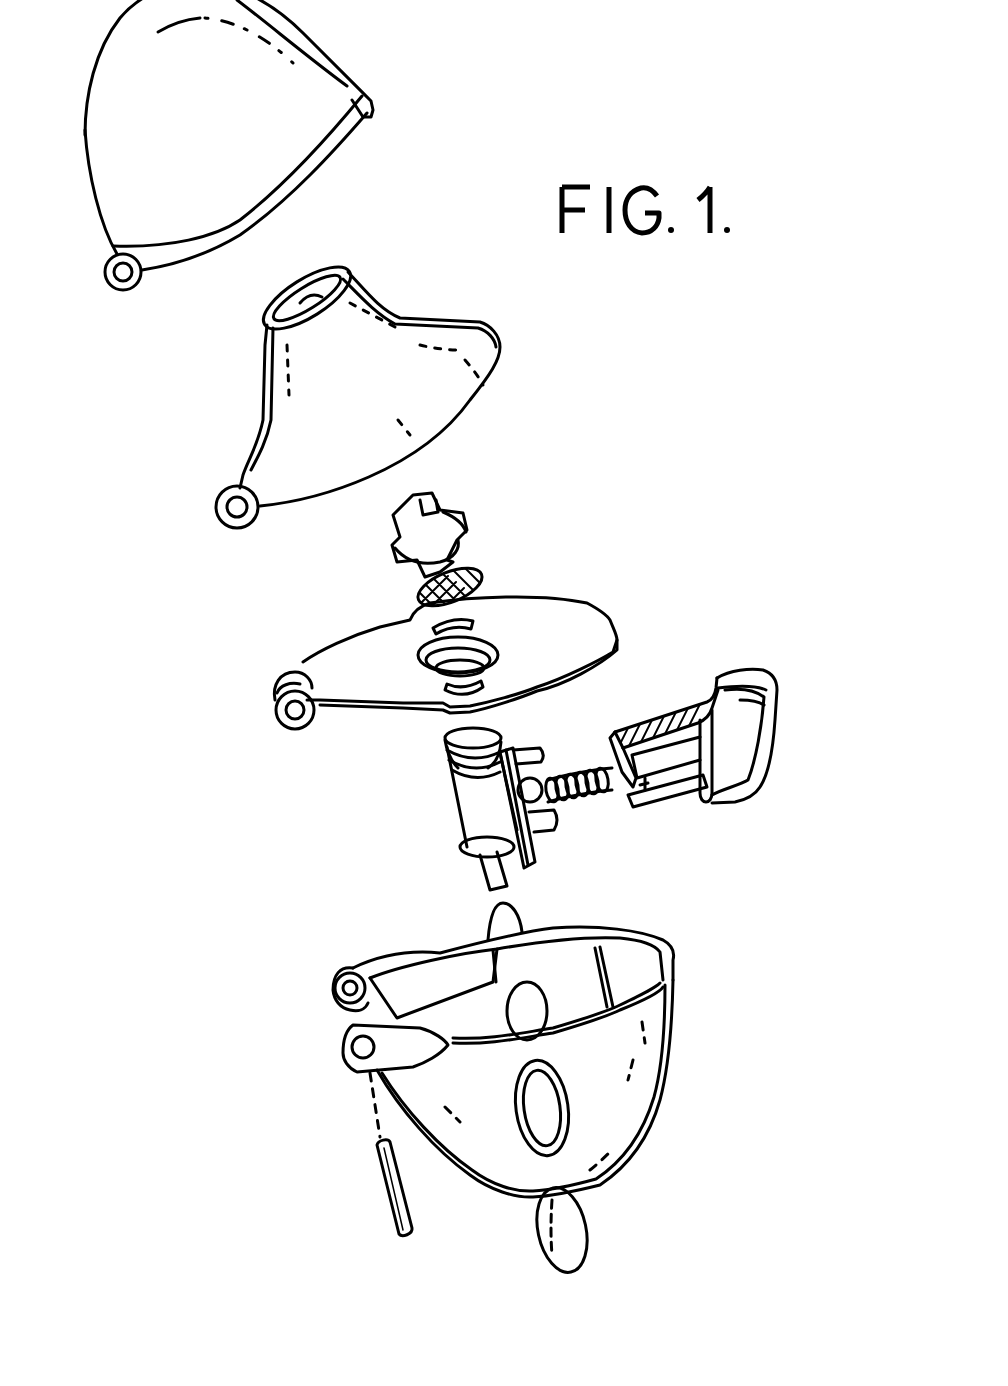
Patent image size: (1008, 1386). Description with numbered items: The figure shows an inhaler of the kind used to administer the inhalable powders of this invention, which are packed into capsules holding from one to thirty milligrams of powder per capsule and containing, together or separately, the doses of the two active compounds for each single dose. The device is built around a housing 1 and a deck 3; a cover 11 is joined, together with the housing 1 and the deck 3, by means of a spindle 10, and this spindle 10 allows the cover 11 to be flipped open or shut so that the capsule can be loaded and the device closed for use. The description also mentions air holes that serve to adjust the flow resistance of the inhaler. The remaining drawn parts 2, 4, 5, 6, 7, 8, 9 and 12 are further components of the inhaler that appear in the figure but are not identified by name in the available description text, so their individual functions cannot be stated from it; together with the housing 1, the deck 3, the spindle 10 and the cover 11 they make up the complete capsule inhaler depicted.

The housing 1 is at (643, 1053).
The cap 2 is at (537, 1237).
The deck 3 is at (380, 683).
The knob 4 is at (457, 530).
The filter disc 5 is at (417, 593).
The valve 6 is at (467, 828).
The latch arm 7 is at (643, 727).
The spring 8 is at (587, 793).
The latch button 9 is at (740, 753).
The spindle 10 is at (383, 1182).
The cover 11 is at (287, 50).
The spout 12 is at (265, 432).